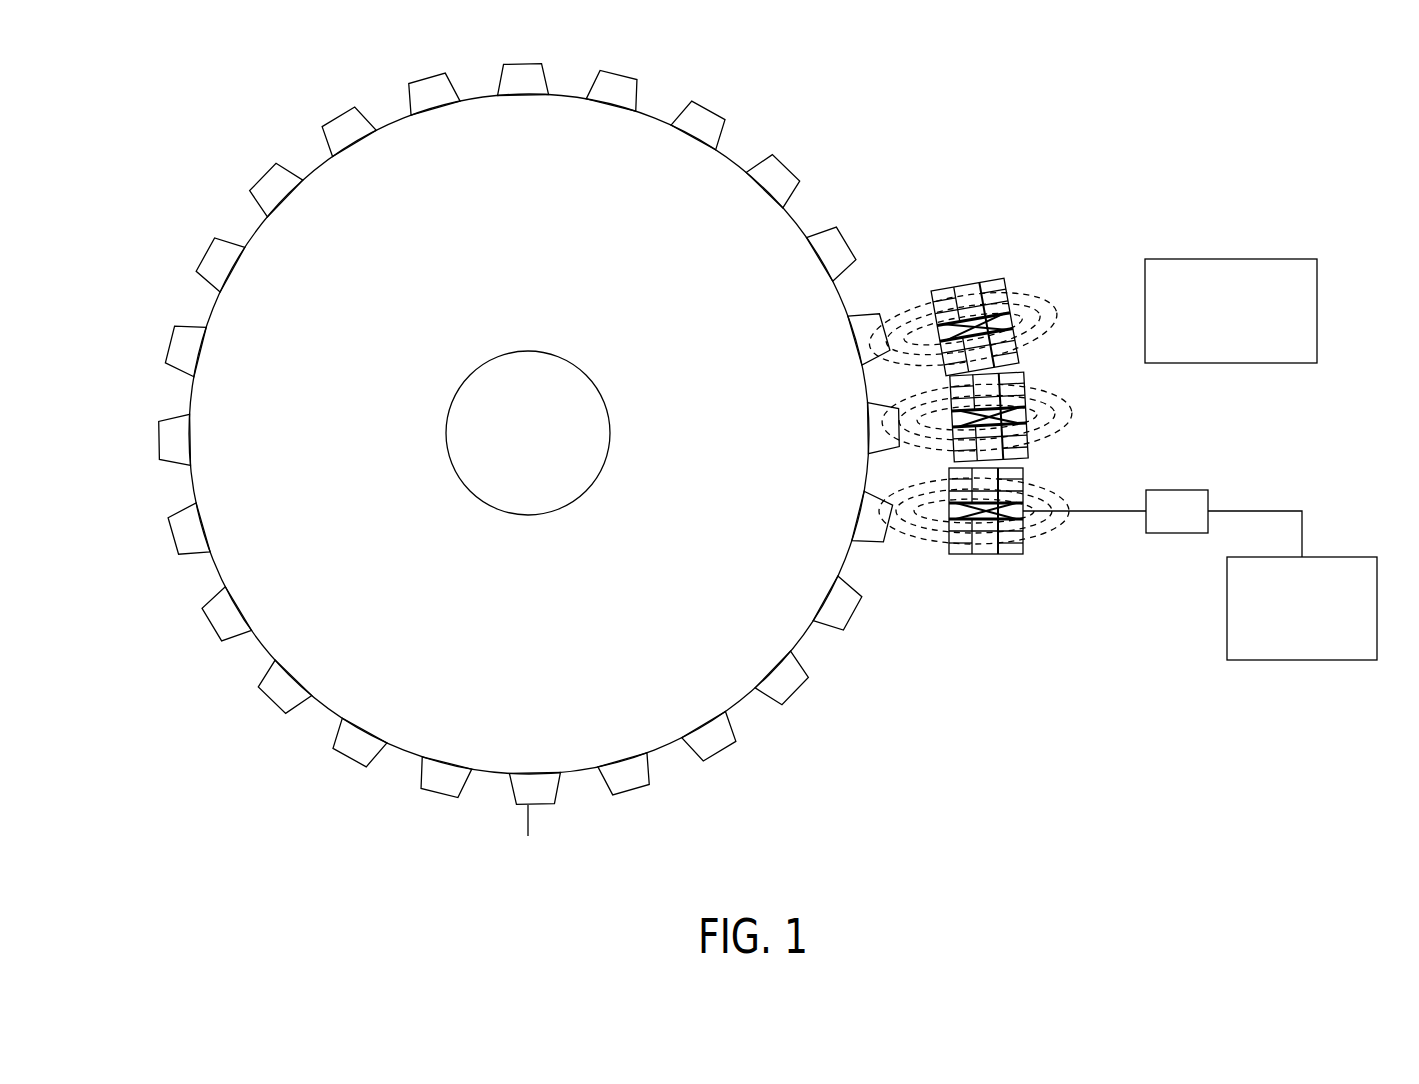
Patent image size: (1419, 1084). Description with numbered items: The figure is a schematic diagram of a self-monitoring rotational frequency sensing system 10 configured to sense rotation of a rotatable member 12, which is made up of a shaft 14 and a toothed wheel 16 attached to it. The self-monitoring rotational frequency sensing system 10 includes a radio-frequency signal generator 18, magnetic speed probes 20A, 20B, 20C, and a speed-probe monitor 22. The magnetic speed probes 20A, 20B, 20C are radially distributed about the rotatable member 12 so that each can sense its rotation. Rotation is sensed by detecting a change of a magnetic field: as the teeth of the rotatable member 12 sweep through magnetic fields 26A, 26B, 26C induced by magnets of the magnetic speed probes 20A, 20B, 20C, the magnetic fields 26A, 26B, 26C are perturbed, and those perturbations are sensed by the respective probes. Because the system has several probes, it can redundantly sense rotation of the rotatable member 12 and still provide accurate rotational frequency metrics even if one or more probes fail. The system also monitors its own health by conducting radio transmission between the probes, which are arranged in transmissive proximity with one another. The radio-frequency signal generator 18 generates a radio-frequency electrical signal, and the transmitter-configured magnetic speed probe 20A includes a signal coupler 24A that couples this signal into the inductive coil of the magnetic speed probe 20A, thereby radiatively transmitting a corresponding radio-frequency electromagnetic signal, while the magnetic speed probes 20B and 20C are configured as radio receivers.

The self-monitoring rotational frequency sensing system 10 is at (1185, 195).
The rotatable member 12 is at (827, 113).
The shaft 14 is at (568, 540).
The toothed wheel 16 is at (822, 650).
The radio-frequency signal generator 18 is at (1300, 661).
The magnetic speed probe 20A is at (1025, 528).
The magnetic speed probe 20B is at (1025, 440).
The magnetic speed probe 20C is at (1010, 348).
The speed-probe monitor 22 is at (1287, 259).
The signal coupler 24A is at (1178, 534).
The magnetic field 26A is at (940, 565).
The magnetic field 26B is at (940, 470).
The magnetic field 26C is at (911, 295).